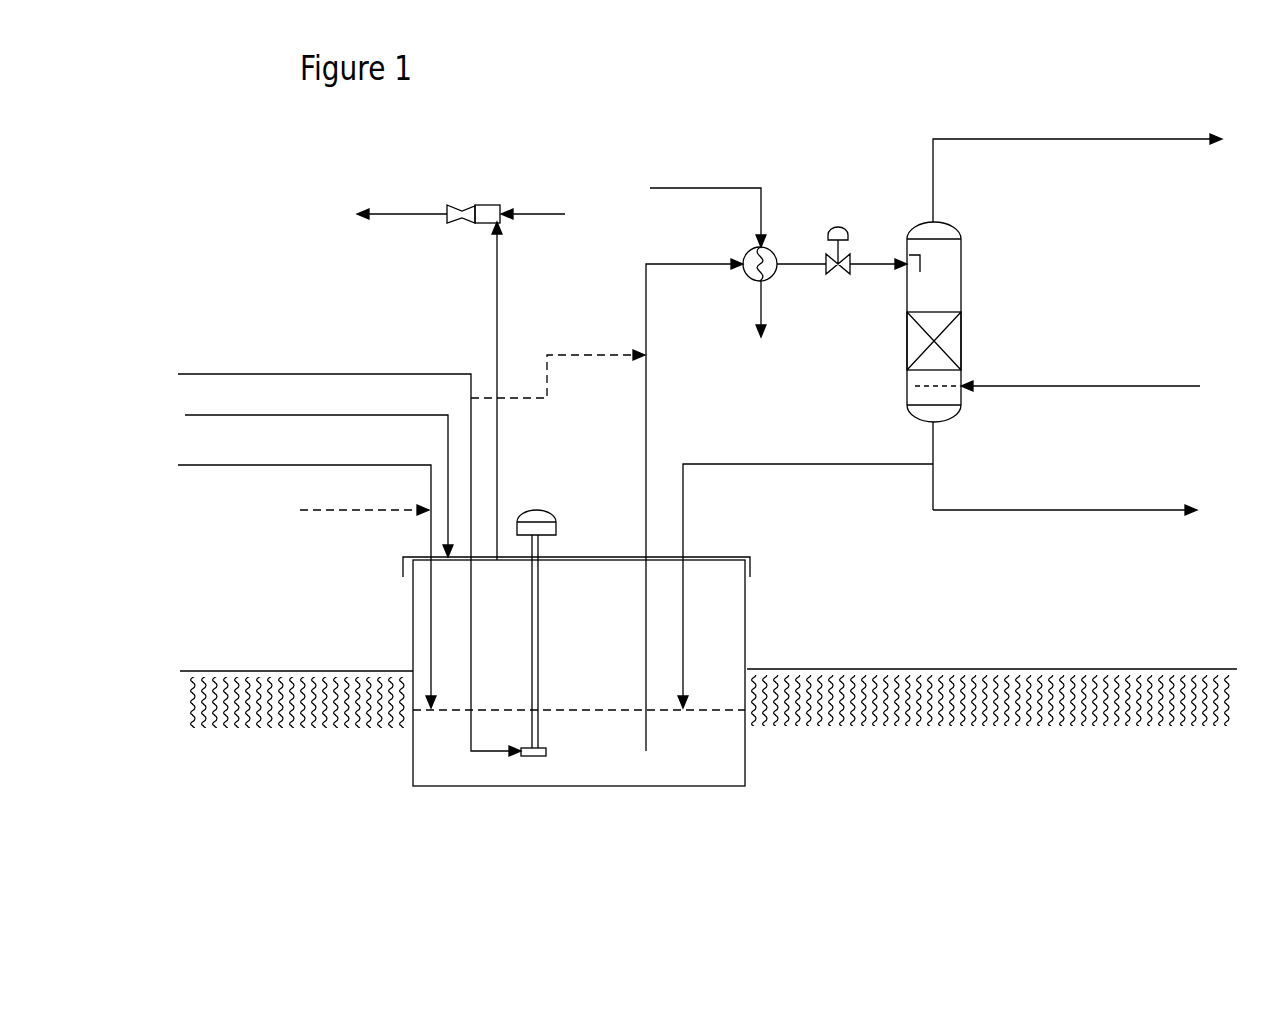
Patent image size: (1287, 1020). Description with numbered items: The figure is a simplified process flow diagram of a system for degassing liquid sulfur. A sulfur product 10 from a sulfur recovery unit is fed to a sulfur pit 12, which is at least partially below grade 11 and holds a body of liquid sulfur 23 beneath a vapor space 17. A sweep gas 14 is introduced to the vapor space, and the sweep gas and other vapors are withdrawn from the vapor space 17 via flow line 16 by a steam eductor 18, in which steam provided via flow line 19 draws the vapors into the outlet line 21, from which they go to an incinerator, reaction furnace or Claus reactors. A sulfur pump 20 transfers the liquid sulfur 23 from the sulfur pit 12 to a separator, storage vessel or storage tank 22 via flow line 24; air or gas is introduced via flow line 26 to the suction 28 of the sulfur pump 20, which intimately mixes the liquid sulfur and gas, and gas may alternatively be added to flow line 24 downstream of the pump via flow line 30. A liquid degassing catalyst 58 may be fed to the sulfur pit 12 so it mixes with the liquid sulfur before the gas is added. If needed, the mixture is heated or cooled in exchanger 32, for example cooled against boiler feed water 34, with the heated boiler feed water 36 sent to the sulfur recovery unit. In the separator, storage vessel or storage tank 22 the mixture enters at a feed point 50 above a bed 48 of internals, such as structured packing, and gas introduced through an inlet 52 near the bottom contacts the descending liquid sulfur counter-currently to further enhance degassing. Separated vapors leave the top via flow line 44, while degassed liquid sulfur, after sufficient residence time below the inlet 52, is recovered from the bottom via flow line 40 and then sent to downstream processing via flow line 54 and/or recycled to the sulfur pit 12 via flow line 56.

The sulfur product 10 is at (195, 468).
The grade 11 is at (242, 673).
The sulfur pit 12 is at (412, 787).
The sweep gas 14 is at (197, 418).
The flow line 16 is at (499, 312).
The vapor space 17 is at (574, 640).
The steam eductor 18 is at (476, 205).
The flow line 19 is at (543, 218).
The sulfur pump 20 is at (532, 509).
The outlet line 21 is at (388, 217).
The separator, storage vessel or storage tank 22 is at (964, 242).
The liquid sulfur 23 is at (678, 762).
The flow line 24 is at (646, 401).
The flow line 26 is at (226, 376).
The suction 28 is at (525, 755).
The flow line 30 is at (533, 401).
The exchanger 32 is at (744, 254).
The boiler feed water 34 is at (698, 188).
The heated boiler feed water 36 is at (764, 328).
The flow line 40 is at (938, 446).
The flow line 44 is at (1065, 143).
The bed 48 is at (963, 326).
The feed point 50 is at (896, 258).
The inlet 52 is at (1095, 382).
The flow line 54 is at (1057, 509).
The flow line 56 is at (782, 462).
The liquid degassing catalyst 58 is at (314, 514).